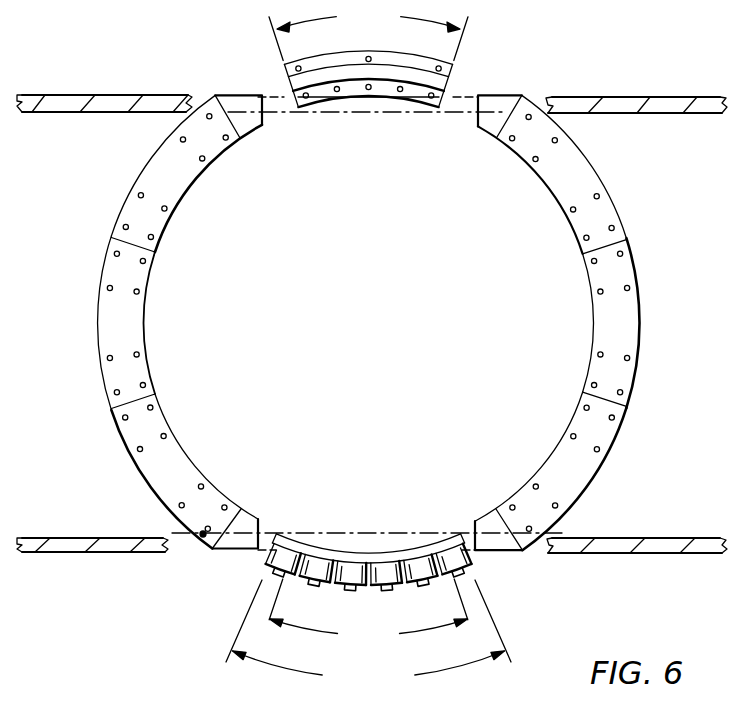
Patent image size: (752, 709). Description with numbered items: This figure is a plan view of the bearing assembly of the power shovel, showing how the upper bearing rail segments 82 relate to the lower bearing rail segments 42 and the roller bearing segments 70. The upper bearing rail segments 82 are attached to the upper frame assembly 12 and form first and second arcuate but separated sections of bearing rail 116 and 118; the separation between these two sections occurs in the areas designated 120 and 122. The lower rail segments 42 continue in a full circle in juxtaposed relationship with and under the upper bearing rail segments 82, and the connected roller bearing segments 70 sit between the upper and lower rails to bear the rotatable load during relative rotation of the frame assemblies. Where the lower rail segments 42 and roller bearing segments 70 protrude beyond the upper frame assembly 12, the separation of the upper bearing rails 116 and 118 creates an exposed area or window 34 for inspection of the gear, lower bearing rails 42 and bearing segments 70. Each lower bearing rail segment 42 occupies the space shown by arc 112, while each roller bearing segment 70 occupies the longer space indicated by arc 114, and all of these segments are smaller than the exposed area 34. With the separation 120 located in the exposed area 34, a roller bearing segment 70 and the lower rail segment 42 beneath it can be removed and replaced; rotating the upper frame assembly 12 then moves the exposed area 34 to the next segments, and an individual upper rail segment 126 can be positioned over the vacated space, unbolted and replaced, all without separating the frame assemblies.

The upper frame assembly 12 is at (104, 104).
The exposed area 34 is at (454, 93).
The lower bearing rail segment 42 is at (320, 74).
The roller bearing segment 70 is at (343, 570).
The upper bearing rail segment 82 is at (378, 322).
The arc 112 is at (368, 327).
The arc 114 is at (368, 635).
The first arcuate section of bearing rail 116 is at (646, 232).
The second arcuate section of bearing rail 118 is at (146, 321).
The upper rail bearing section separation 120 is at (372, 551).
The upper rail bearing section separation 122 is at (403, 124).
The individual upper rail segment 126 is at (180, 477).